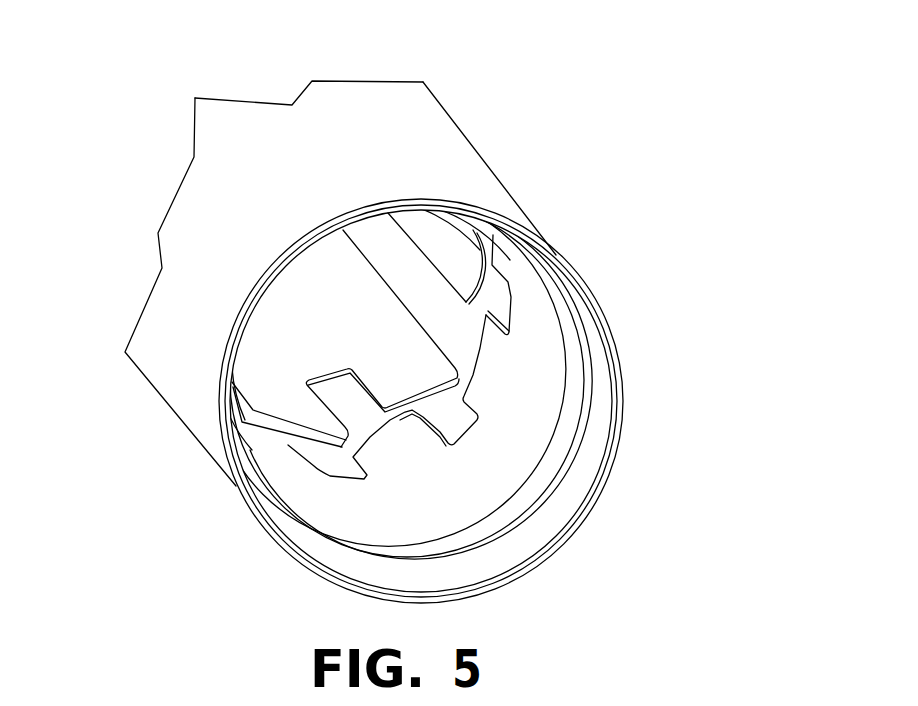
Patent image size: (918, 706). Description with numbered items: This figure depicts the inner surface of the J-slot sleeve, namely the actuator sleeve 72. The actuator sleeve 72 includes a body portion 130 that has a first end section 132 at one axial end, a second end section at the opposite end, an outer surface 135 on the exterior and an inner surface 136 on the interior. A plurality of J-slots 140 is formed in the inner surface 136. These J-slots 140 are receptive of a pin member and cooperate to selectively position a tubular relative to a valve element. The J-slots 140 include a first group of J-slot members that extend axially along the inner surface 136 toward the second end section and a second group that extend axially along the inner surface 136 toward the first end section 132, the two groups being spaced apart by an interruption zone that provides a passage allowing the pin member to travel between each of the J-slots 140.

The actuator sleeve 72 is at (424, 316).
The body portion 130 is at (355, 257).
The first end section 132 is at (583, 524).
The outer surface 135 is at (313, 123).
The inner surface 136 is at (285, 363).
The plurality of J-slots 140 is at (355, 303).